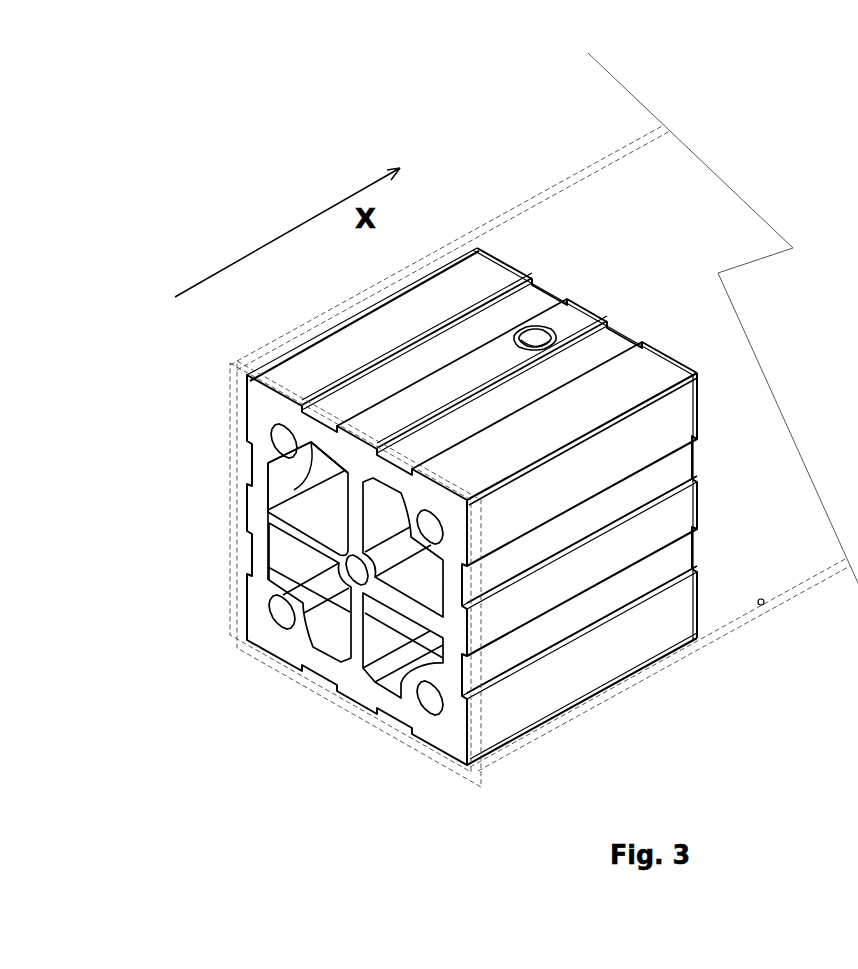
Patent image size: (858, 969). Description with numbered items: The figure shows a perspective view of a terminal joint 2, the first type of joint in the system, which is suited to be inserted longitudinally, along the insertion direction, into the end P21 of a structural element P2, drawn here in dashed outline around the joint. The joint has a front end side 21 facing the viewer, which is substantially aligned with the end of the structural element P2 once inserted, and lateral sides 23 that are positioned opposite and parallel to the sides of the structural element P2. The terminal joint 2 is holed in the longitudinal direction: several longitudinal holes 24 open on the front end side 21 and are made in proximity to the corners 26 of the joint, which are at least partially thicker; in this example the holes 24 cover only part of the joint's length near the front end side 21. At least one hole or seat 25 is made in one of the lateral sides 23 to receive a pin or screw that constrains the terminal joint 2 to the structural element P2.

The terminal joint 2 is at (302, 166).
The front end side 21 is at (345, 681).
The lateral side 23 is at (680, 428).
The longitudinal hole 24 is at (270, 444).
The hole or seat 25 is at (537, 337).
The corner 26 is at (299, 479).
The structural element P2 is at (762, 605).
The end of the structural element P21 is at (464, 791).